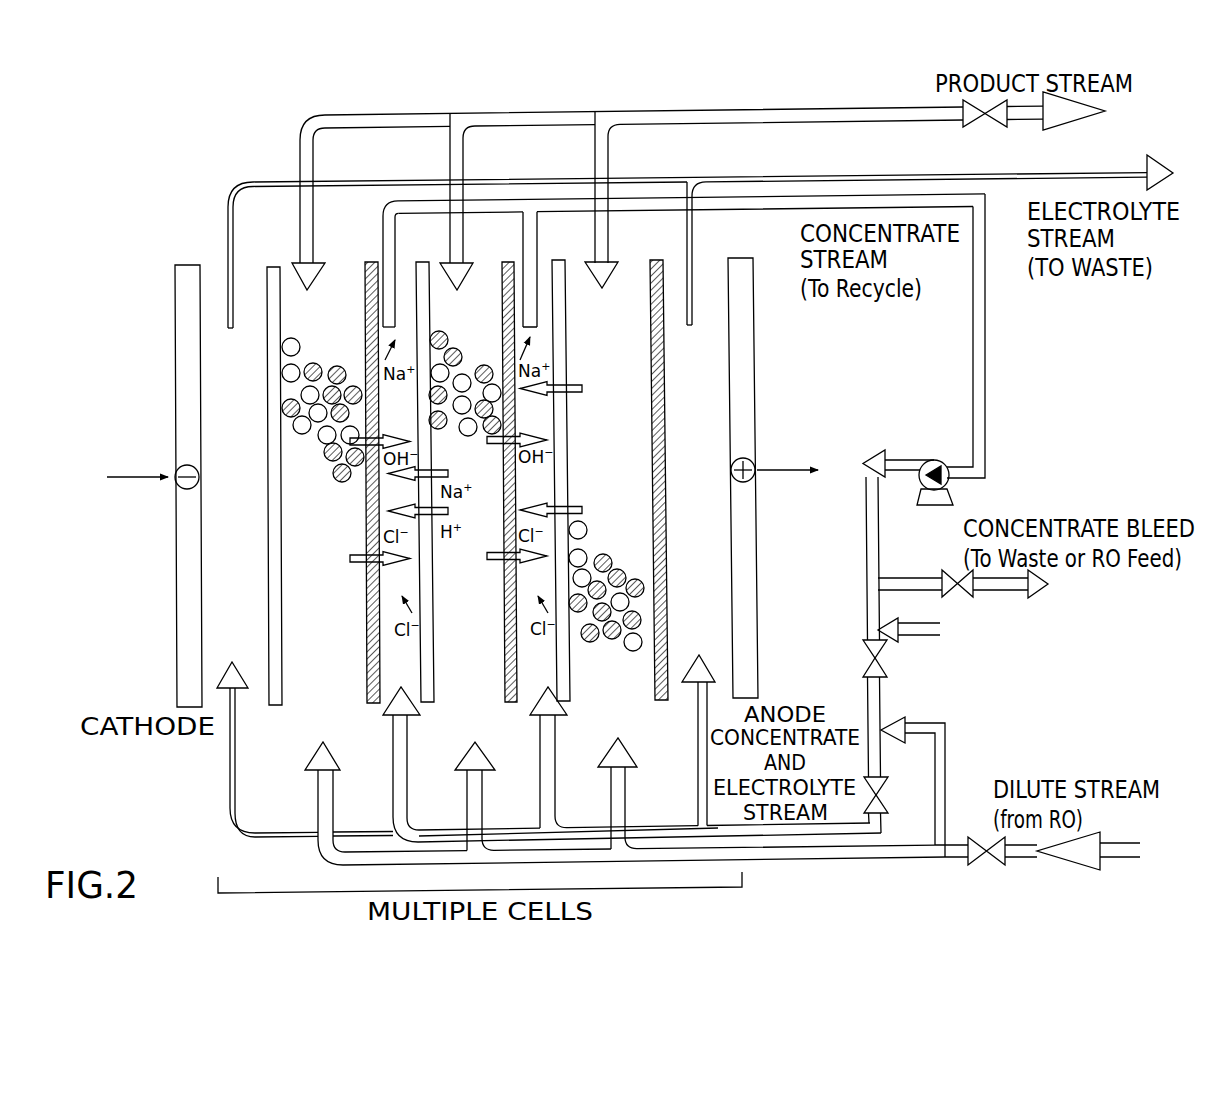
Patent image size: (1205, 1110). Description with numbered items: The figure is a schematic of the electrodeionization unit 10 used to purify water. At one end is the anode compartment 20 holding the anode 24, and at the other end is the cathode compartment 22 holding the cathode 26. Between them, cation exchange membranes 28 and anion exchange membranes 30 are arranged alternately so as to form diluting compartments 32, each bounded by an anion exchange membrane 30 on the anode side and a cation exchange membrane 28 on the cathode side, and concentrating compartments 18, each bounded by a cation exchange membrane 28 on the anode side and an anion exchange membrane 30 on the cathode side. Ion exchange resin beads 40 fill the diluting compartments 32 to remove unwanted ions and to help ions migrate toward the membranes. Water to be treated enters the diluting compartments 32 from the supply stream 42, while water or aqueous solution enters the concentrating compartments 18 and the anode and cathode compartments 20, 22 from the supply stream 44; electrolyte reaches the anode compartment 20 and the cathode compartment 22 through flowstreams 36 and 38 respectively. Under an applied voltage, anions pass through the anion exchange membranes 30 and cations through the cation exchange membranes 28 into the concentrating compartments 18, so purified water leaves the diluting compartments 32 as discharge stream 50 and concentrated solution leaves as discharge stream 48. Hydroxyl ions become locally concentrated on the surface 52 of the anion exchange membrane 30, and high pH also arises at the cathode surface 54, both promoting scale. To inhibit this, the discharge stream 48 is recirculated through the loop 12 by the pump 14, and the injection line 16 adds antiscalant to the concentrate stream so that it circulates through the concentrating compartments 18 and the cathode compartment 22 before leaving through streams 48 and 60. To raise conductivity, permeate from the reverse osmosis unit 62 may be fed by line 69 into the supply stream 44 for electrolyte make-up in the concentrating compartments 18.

The electrodeionization unit 10 is at (222, 150).
The recirculation loop 12 is at (723, 308).
The pump 14 is at (935, 460).
The injection line 16 is at (925, 636).
The concentrating compartments 18 is at (404, 290).
The anode compartment 20 is at (710, 420).
The cathode compartment 22 is at (248, 468).
The anode 24 is at (757, 410).
The cathode 26 is at (172, 600).
The cation exchange membranes 28 is at (285, 625).
The anion exchange membranes 30 is at (365, 505).
The diluting compartments 32 is at (463, 484).
The anode electrolyte flowstream 36 is at (697, 718).
The cathode electrolyte supply stream 38 is at (228, 770).
The ion exchange resin beads 40 is at (324, 350).
The supply stream 42 is at (812, 862).
The concentrate compartment supply stream 44 is at (680, 820).
The discharge stream 48 is at (763, 213).
The purified water discharge stream 50 is at (676, 110).
The anion exchange membrane surface 52 is at (515, 485).
The cathode surface 54 is at (205, 615).
The cathode compartment discharge stream 60 is at (220, 242).
The reverse osmosis unit 62 is at (693, 220).
The permeate line 69 is at (945, 760).